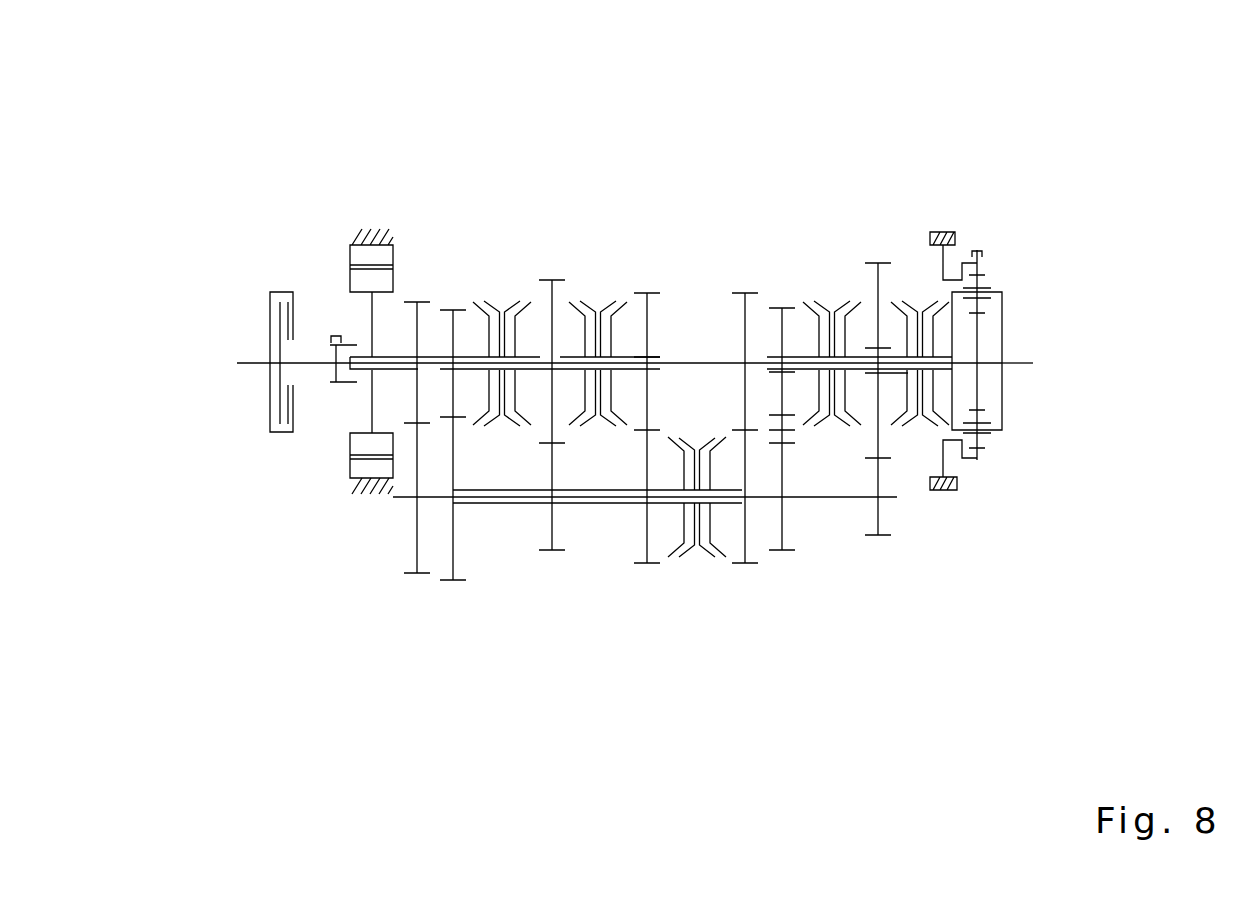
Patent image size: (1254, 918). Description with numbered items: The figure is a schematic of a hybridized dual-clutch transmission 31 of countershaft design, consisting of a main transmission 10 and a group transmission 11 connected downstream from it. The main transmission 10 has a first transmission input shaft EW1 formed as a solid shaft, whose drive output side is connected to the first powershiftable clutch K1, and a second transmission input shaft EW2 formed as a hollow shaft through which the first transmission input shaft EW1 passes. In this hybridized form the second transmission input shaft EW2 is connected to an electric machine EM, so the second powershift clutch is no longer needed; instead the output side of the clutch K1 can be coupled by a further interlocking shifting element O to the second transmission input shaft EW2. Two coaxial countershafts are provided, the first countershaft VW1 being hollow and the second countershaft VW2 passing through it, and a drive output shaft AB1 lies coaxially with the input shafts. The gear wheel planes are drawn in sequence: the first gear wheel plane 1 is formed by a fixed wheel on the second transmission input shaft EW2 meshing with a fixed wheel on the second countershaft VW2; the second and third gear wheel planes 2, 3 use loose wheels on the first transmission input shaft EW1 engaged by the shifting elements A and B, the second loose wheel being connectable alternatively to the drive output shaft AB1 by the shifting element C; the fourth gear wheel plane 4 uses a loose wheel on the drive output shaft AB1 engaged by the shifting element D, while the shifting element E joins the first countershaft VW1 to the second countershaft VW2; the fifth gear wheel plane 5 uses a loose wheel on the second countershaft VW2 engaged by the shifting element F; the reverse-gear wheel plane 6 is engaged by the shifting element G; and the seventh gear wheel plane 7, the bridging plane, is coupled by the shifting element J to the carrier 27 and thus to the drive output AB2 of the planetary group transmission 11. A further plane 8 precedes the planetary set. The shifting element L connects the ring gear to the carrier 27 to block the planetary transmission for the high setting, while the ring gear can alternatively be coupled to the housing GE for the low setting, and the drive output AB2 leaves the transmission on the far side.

The first gear wheel plane 1 is at (417, 290).
The second gear wheel plane 2 is at (453, 298).
The third gear wheel plane 3 is at (552, 270).
The fourth gear wheel plane 4 is at (647, 283).
The fifth gear wheel plane 5 is at (745, 283).
The reverse-gear wheel plane 6 is at (782, 298).
The seventh gear wheel plane 7 is at (878, 253).
The gear 8 is at (977, 238).
The main transmission 10 is at (585, 212).
The group transmission 11 is at (1002, 200).
The carrier 27 is at (1003, 405).
The transmission 31 is at (295, 580).
The first powershiftable clutch K1 is at (273, 262).
The electric machine EM is at (350, 252).
The first transmission input shaft EW1 is at (430, 360).
The second transmission input shaft EW2 is at (365, 372).
The drive output shaft AB1 is at (697, 360).
The drive output AB2 is at (1025, 360).
The housing GE is at (943, 232).
The first countershaft VW1 is at (500, 505).
The second countershaft VW2 is at (815, 500).
The first interlocking shifting element A is at (495, 347).
The second interlocking shifting element B is at (522, 346).
The third interlocking shifting element C is at (592, 347).
The fourth interlocking shifting element D is at (619, 346).
The fifth interlocking shifting element E is at (691, 516).
The sixth interlocking shifting element F is at (716, 516).
The seventh interlocking shifting element G is at (824, 347).
The eleventh interlocking shifting element L is at (853, 346).
The tenth interlocking shifting element J is at (920, 347).
The further interlocking shifting element O is at (343, 375).